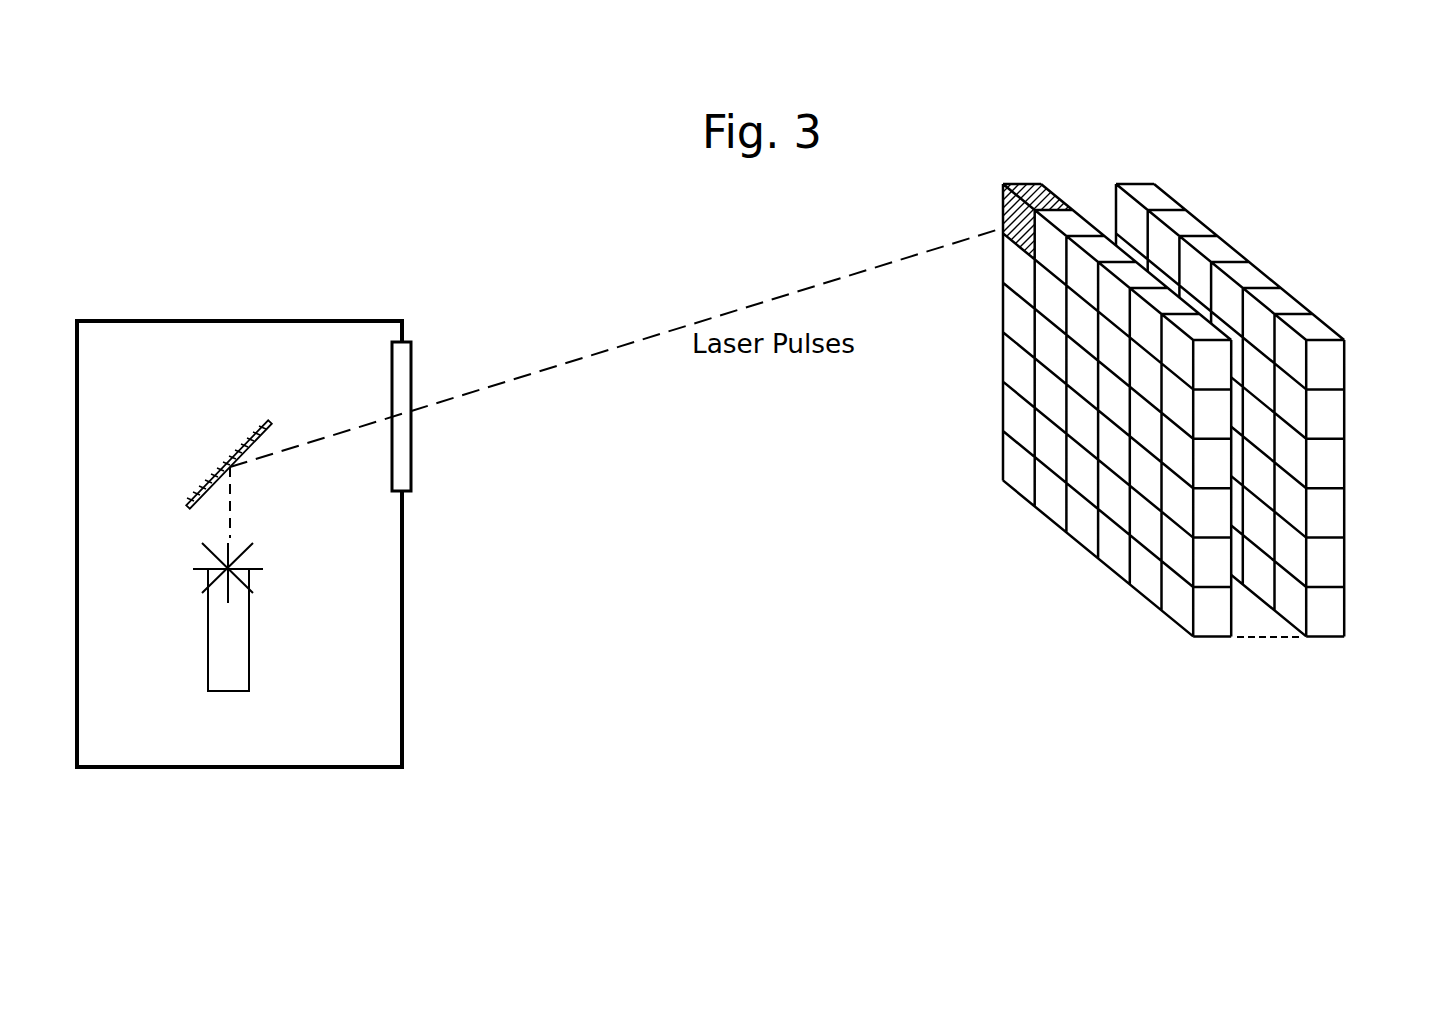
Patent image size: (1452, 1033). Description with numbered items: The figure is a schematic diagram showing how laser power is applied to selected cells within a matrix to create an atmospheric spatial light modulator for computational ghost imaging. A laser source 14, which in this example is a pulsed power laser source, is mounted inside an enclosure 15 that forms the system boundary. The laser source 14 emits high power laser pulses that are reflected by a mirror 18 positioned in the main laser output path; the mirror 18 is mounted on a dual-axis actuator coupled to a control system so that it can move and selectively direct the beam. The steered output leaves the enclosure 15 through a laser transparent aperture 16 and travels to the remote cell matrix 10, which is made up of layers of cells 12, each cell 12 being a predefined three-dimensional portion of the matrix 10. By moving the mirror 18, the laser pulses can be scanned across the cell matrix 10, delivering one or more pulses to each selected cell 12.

The cell matrix 10 is at (1180, 432).
The cell 12 is at (1087, 527).
The laser source 14 is at (237, 644).
The enclosure 15 is at (405, 662).
The laser transparent aperture 16 is at (403, 375).
The mirror 18 is at (246, 437).